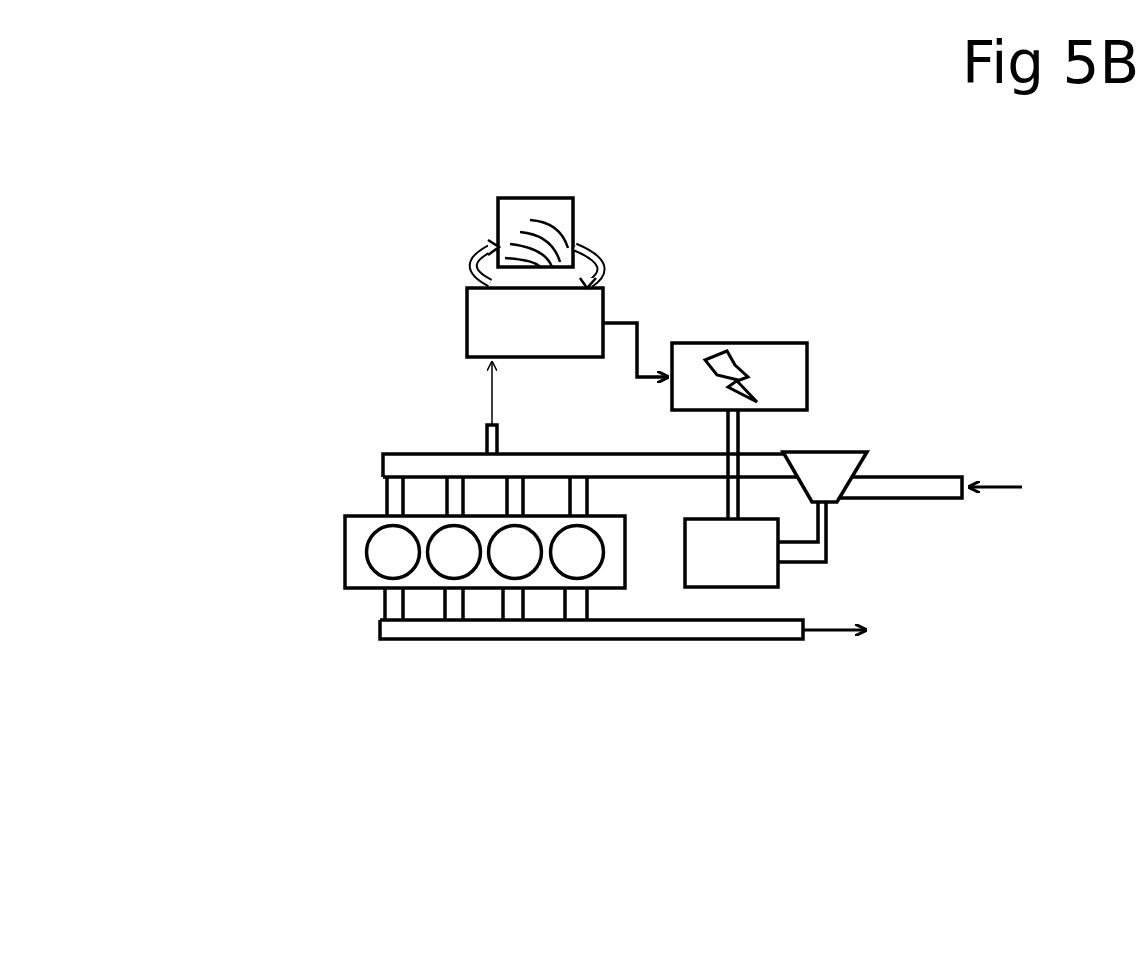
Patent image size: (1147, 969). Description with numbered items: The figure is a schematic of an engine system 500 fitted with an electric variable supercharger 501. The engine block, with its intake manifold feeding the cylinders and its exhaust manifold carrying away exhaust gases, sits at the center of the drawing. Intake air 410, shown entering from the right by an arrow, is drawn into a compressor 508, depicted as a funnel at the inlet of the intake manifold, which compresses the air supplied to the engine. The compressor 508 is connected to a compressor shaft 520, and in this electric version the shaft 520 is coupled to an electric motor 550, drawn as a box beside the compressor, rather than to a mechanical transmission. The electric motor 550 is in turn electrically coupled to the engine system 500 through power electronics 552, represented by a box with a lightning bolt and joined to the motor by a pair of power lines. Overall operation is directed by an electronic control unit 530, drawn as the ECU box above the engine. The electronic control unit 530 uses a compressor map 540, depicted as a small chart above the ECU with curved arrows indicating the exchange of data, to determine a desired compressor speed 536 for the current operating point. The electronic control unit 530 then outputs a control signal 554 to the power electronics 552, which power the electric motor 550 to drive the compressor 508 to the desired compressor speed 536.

The engine system 500 is at (241, 139).
The electronic control unit 530 is at (598, 300).
The compressor map 540 is at (541, 210).
The desired compressor speed 536 is at (590, 240).
The control signal 554 is at (658, 372).
The power electronics 552 is at (755, 355).
The electric variable supercharger 501 is at (836, 556).
The intake air 410 is at (1000, 487).
The compressor 508 is at (817, 465).
The compressor shaft 520 is at (830, 547).
The electric motor 550 is at (712, 570).